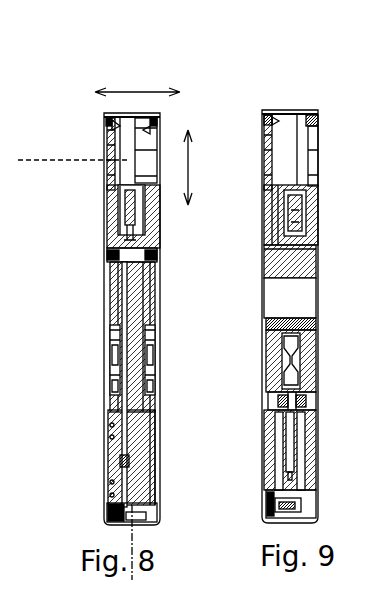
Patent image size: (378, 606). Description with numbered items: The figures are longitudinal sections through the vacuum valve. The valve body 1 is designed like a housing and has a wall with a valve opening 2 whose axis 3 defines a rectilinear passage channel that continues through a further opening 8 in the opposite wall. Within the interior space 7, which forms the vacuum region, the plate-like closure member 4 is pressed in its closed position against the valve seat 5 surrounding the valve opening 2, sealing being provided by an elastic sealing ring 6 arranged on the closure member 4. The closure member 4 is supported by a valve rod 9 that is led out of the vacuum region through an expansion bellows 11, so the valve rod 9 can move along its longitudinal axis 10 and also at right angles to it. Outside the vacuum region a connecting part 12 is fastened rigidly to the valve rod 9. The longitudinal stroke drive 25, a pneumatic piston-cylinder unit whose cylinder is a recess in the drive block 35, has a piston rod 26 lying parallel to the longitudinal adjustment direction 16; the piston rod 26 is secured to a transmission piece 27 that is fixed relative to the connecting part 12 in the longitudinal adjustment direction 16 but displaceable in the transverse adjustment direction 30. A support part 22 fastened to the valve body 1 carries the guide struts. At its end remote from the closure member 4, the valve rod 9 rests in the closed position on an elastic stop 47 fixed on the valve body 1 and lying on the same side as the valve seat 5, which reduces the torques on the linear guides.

In FIG. 9, the valve body 1 is at (317, 112).
In FIG. 8, the valve opening 2 is at (110, 153).
In FIG. 9, the valve opening 2 is at (270, 138).
In FIG. 8, the axis 3 is at (40, 163).
In FIG. 8, the closure member 4 is at (107, 210).
In FIG. 9, the closure member 4 is at (292, 192).
In FIG. 8, the valve seat 5 is at (108, 122).
In FIG. 9, the valve seat 5 is at (275, 112).
In FIG. 8, the sealing ring 6 is at (112, 243).
In FIG. 8, the interior space 7 is at (153, 118).
In FIG. 8, the further opening 8 is at (150, 137).
In FIG. 8, the valve rod 9 is at (128, 433).
In FIG. 8, the longitudinal axis 10 is at (112, 501).
In FIG. 8, the expansion bellows 11 is at (157, 258).
In FIG. 9, the expansion bellows 11 is at (302, 305).
In FIG. 8, the connecting part 12 is at (157, 350).
In FIG. 9, the connecting part 12 is at (310, 341).
In FIG. 8, the longitudinal adjustment direction 16 is at (191, 167).
In FIG. 9, the support part 22 is at (310, 256).
In FIG. 9, the longitudinal stroke drive 25 is at (318, 475).
In FIG. 9, the piston rod 26 is at (290, 448).
In FIG. 9, the transmission piece 27 is at (315, 388).
In FIG. 8, the transverse adjustment direction 30 is at (136, 90).
In FIG. 8, the drive block 35 is at (120, 464).
In FIG. 9, the drive block 35 is at (266, 464).
In FIG. 8, the stop 47 is at (128, 464).